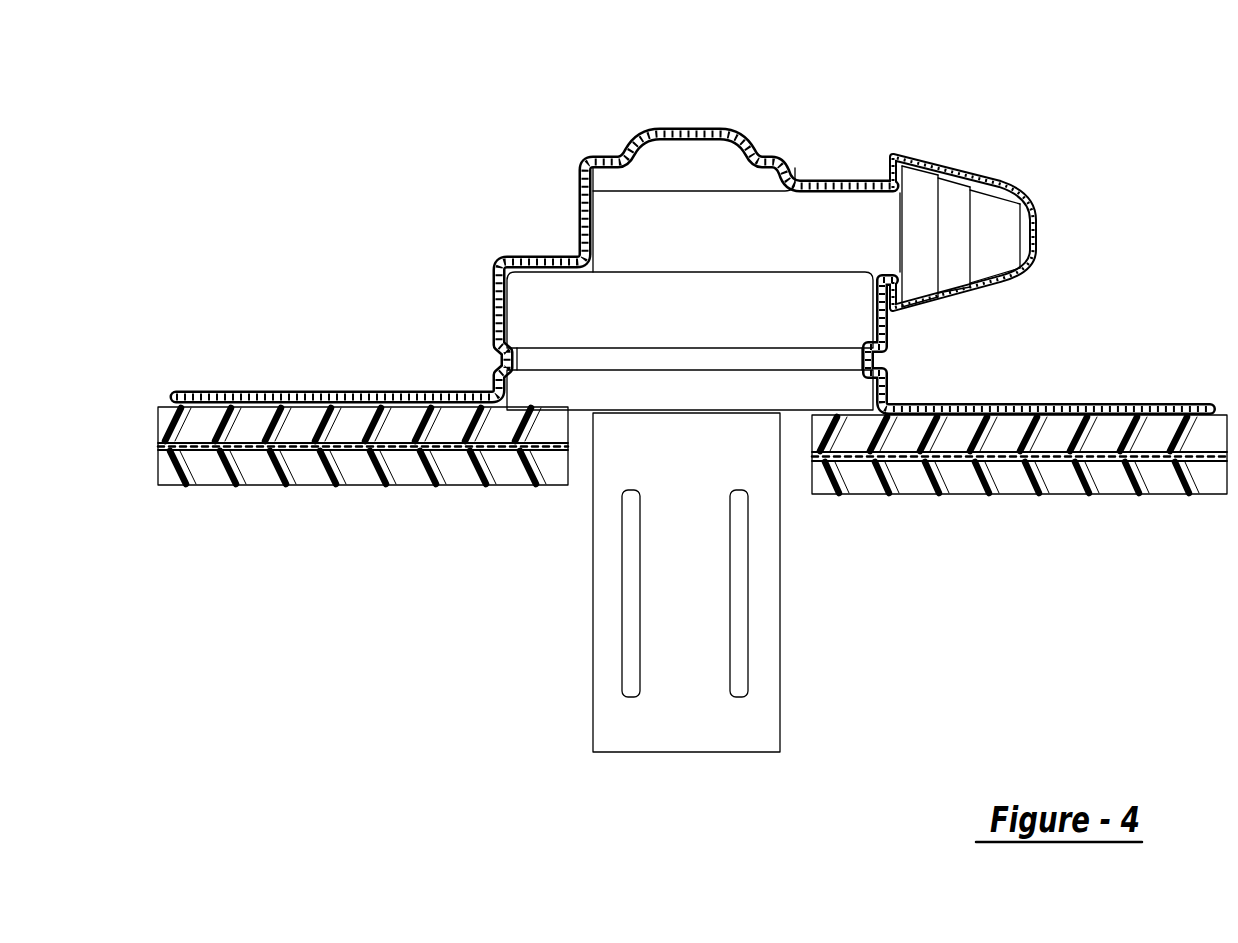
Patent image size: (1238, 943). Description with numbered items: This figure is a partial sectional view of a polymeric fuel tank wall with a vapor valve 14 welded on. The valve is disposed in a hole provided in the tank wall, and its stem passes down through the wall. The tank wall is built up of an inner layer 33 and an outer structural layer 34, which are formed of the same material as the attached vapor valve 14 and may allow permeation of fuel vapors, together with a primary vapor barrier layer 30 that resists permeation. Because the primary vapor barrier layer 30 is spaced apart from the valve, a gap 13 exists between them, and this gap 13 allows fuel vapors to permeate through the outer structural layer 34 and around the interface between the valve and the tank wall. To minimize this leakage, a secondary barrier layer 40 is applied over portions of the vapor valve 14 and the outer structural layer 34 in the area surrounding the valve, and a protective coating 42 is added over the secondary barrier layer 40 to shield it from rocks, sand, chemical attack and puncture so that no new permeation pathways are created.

The gap 13 is at (580, 462).
The vapor valve 14 is at (767, 157).
The primary vapor barrier layer 30 is at (205, 486).
The inner layer 33 is at (353, 486).
The outer structural layer 34 is at (1167, 411).
The secondary barrier layer 40 is at (546, 254).
The protective coating 42 is at (592, 160).